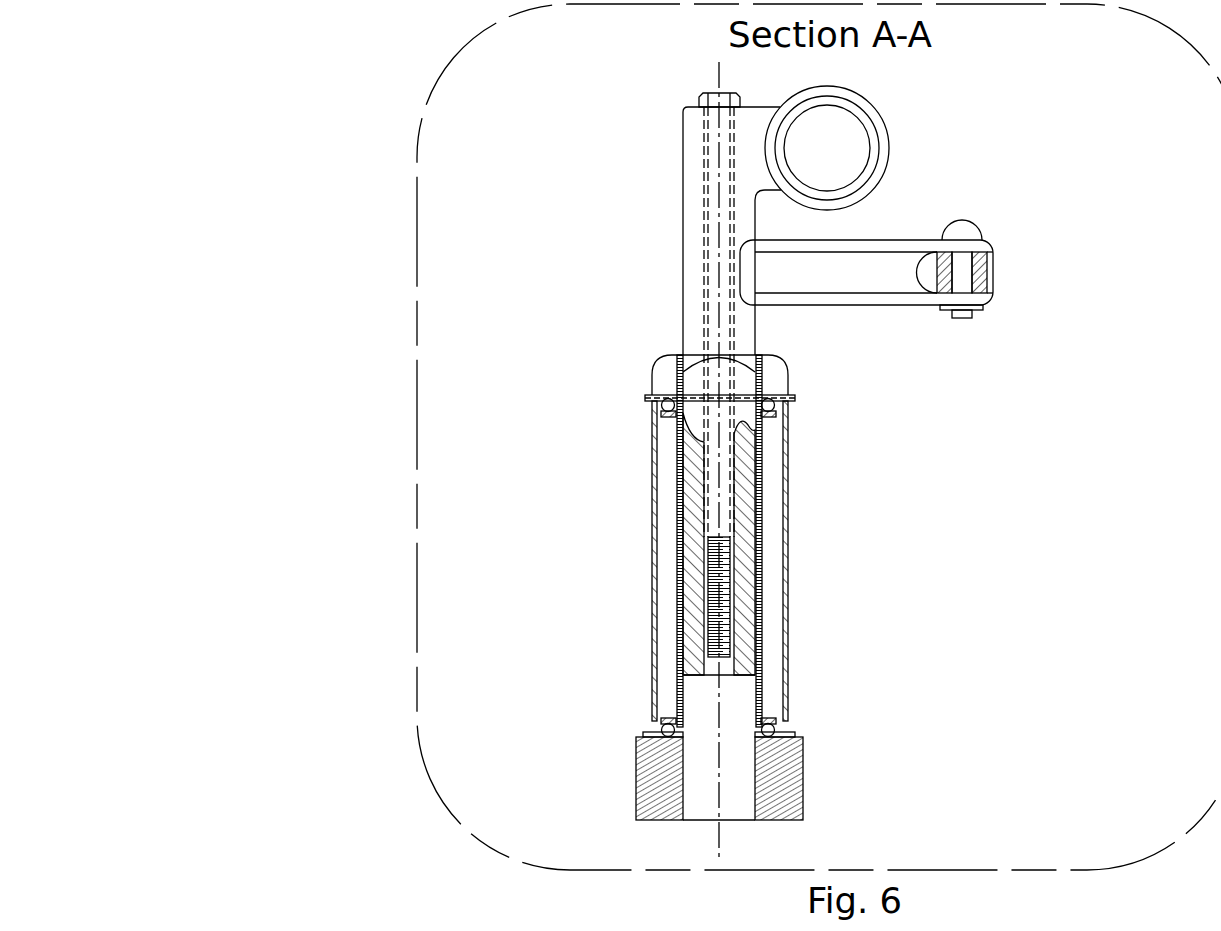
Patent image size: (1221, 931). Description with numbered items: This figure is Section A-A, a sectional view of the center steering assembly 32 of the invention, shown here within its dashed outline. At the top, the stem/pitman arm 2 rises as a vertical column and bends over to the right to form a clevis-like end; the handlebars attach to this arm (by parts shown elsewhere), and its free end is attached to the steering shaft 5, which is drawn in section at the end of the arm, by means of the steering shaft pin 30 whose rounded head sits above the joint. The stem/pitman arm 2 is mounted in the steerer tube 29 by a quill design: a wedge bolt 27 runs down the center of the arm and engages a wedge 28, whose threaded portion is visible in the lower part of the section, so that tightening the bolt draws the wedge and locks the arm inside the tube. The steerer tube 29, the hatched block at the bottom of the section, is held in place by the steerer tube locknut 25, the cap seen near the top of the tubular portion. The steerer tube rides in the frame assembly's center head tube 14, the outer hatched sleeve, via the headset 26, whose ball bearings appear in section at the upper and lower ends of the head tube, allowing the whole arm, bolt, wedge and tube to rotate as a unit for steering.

The stem/pitman arm 2 is at (683, 253).
The steering shaft 5 is at (1000, 260).
The center head tube 14 is at (798, 641).
The steerer tube locknut 25 is at (648, 369).
The headset 26 is at (754, 714).
The wedge bolt 27 is at (736, 475).
The wedge 28 is at (757, 559).
The steerer tube 29 is at (795, 764).
The steering shaft pin 30 is at (972, 211).
The center steering assembly 32 is at (407, 424).